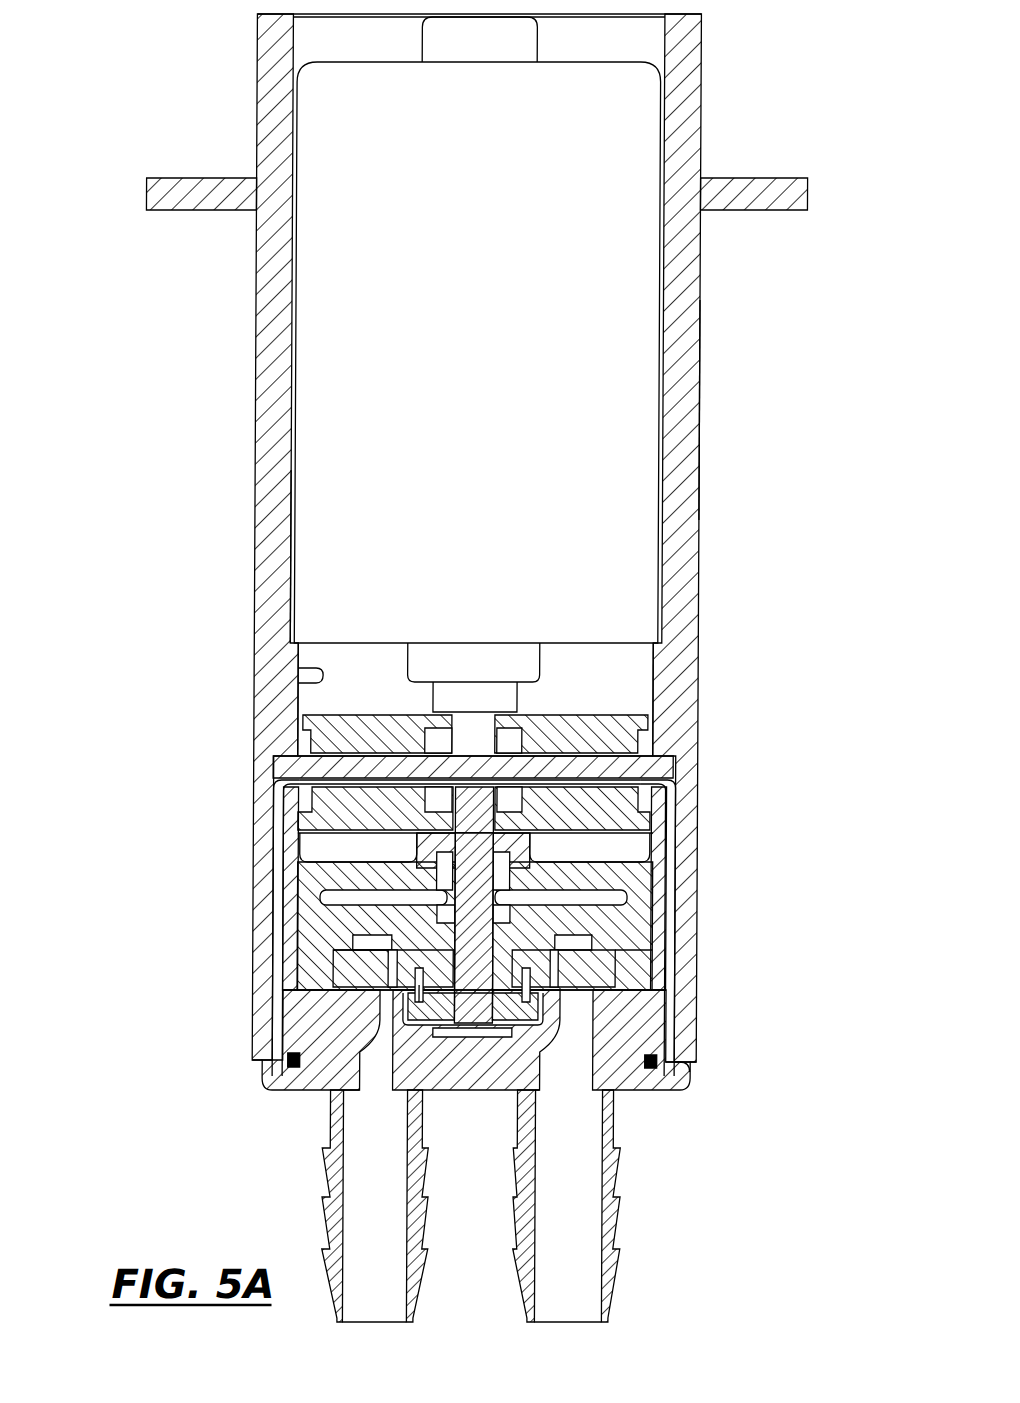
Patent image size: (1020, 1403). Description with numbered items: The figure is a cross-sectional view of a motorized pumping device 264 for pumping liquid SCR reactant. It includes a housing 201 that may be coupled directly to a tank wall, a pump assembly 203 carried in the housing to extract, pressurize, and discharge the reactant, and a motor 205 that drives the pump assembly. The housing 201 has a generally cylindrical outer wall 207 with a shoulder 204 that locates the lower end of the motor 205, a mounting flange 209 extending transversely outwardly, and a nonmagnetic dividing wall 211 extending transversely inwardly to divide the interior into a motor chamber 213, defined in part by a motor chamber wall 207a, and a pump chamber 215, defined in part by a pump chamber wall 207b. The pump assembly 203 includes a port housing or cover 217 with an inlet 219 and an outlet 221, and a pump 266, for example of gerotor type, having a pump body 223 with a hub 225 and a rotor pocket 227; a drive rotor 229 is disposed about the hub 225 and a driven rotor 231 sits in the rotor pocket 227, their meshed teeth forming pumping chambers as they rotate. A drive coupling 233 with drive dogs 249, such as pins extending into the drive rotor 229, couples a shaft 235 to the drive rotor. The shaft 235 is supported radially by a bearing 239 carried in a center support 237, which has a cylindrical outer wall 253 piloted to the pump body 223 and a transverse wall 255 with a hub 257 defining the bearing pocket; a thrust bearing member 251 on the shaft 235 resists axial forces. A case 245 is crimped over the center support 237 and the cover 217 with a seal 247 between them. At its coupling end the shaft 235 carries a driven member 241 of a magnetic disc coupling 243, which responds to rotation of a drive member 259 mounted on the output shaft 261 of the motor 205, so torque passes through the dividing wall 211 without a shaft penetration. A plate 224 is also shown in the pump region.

The housing 201 is at (213, 357).
The pump assembly 203 is at (306, 1115).
The shoulder 204 is at (303, 562).
The motor 205 is at (643, 488).
The outer wall 207 is at (701, 292).
The motor chamber wall 207a is at (692, 415).
The pump chamber wall 207b is at (691, 872).
The mounting flange 209 is at (753, 196).
The dividing wall 211 is at (575, 766).
The motor chamber 213 is at (303, 680).
The pump chamber 215 is at (302, 873).
The port housing or cover 217 is at (628, 1080).
The inlet 219 is at (356, 1243).
The outlet 221 is at (596, 1278).
The pump body 223 is at (644, 913).
The seal plate 224 is at (386, 958).
The hub 225 is at (364, 947).
The rotor pocket 227 is at (604, 972).
The drive rotor 229 is at (661, 1062).
The driven rotor 231 is at (550, 990).
The drive coupling 233 is at (427, 1000).
The shaft 235 is at (504, 886).
The center support 237 is at (582, 863).
The bearing 239 is at (444, 864).
The driven member 241 is at (569, 795).
The magnetic disc coupling 243 is at (250, 830).
The case 245 is at (364, 943).
The seal 247 is at (295, 1066).
The drive dogs 249 is at (531, 1005).
The thrust bearing member 251 is at (589, 943).
The outer wall 253 is at (292, 836).
The wall 255 is at (327, 878).
The hub 257 is at (524, 838).
The drive member 259 is at (345, 716).
The output shaft 261 is at (485, 732).
The motorized pumping device 264 is at (222, 113).
The pump 266 is at (305, 1004).